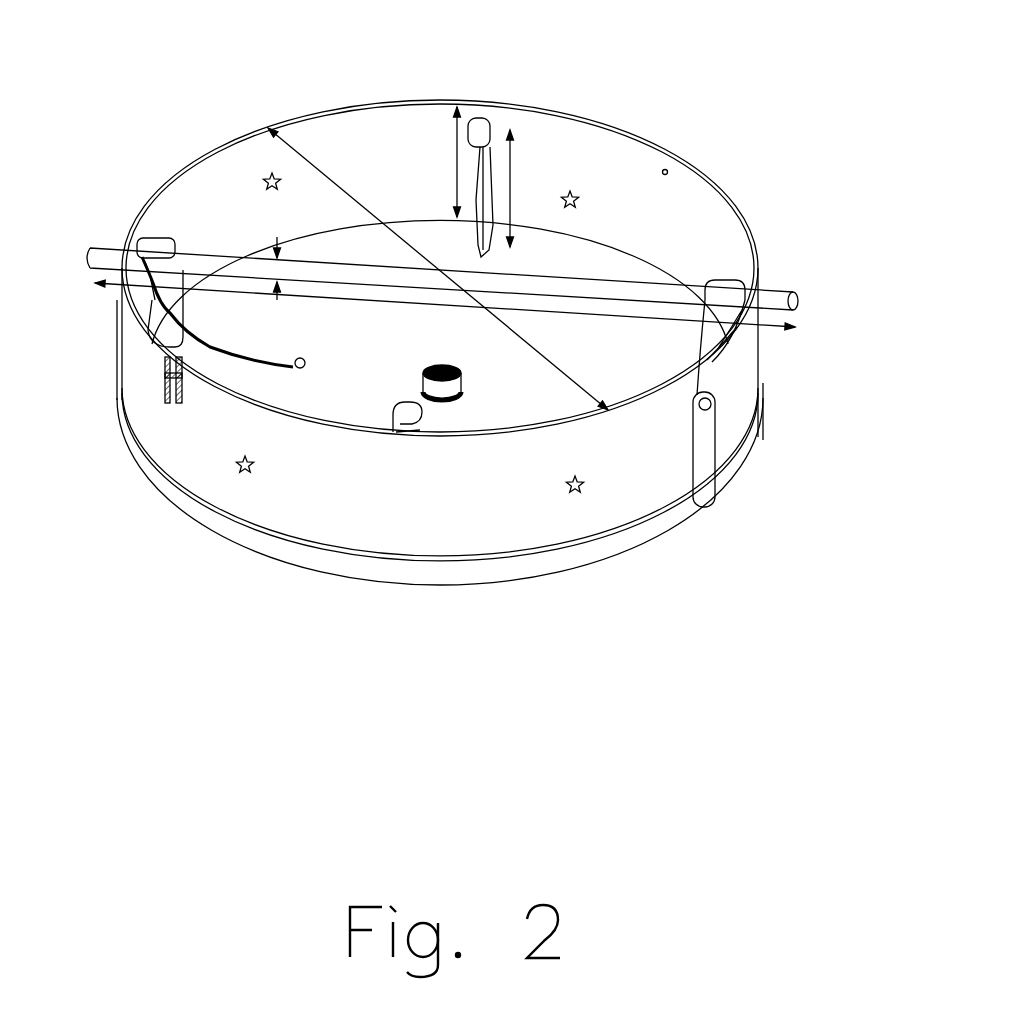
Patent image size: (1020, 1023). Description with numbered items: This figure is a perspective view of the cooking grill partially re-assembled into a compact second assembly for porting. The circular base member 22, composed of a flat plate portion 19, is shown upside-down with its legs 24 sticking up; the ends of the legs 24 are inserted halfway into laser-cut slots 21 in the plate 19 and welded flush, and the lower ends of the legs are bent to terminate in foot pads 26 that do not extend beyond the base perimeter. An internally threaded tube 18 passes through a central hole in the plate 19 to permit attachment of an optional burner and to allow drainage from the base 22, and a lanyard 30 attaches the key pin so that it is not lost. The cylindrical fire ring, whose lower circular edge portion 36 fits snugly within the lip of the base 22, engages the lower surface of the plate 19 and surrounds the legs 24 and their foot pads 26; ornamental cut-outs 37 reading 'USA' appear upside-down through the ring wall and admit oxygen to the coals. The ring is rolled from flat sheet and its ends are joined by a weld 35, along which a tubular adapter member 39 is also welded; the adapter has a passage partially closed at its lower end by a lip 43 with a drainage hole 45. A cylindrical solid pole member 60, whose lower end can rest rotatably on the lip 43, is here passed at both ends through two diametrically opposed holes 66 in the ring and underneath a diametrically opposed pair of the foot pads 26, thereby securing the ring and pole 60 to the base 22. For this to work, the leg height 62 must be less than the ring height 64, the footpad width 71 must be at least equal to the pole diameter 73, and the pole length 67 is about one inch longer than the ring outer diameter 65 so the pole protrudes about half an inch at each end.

The internally threaded tube 18 is at (423, 379).
The flat plate portion 19 is at (407, 339).
The slots 21 is at (492, 248).
The circular base member 22 is at (585, 553).
The legs 24 is at (160, 242).
The foot pads 26 is at (482, 125).
The lanyard 30 is at (257, 362).
The weld 35 is at (693, 395).
The lower circular edge portion 36 is at (695, 172).
The cut-outs 37 is at (422, 515).
The tubular adapter member 39 is at (715, 490).
The lip 43 is at (713, 397).
The drainage hole 45 is at (713, 405).
The pole member 60 is at (770, 290).
The leg height 62 is at (512, 130).
The ring height 64 is at (457, 115).
The ring outer diameter 65 is at (297, 126).
The holes 66 is at (118, 246).
The pole length 67 is at (115, 286).
The footpad width 71 is at (423, 430).
The pole diameter 73 is at (277, 300).